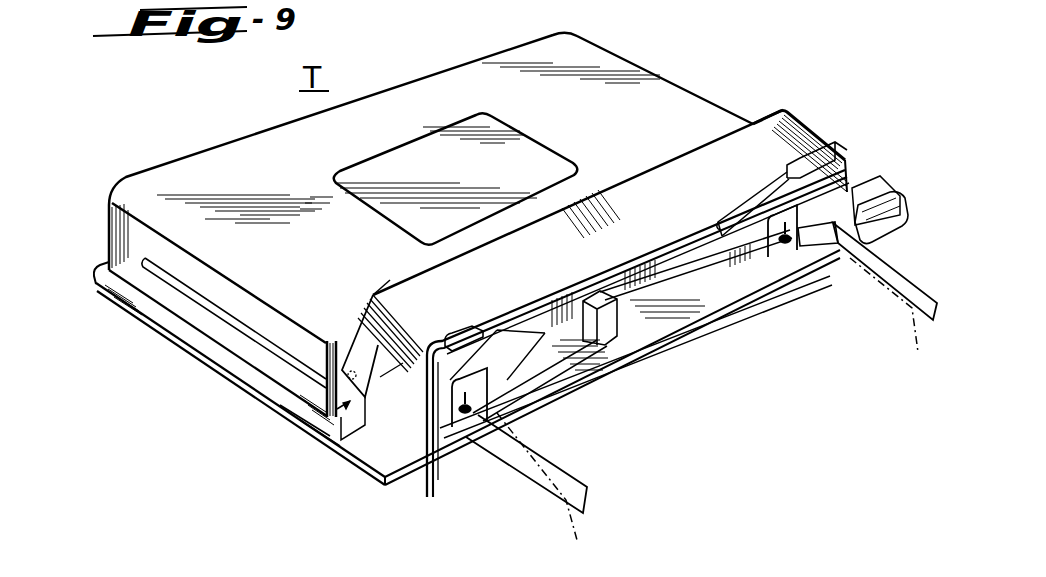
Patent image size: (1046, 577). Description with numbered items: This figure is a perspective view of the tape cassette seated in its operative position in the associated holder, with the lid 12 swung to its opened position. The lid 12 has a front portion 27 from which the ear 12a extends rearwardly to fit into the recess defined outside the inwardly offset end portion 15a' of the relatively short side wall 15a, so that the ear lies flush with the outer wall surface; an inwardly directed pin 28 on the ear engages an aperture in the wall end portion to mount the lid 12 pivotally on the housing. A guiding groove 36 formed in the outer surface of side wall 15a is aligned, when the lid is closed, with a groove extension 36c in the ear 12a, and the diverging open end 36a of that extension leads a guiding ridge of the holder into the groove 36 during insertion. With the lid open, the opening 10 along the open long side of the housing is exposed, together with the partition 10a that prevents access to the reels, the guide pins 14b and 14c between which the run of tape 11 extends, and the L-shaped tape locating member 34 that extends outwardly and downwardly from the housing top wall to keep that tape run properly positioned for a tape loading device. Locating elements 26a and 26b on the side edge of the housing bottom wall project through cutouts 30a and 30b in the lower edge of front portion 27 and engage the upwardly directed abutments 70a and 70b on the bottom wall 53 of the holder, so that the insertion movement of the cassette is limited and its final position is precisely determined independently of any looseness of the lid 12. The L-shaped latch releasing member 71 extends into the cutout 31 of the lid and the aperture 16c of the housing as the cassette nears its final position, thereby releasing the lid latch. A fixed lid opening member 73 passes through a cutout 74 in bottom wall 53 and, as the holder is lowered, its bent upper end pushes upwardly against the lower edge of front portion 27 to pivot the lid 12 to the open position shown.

The lid 12 is at (733, 158).
The ear 12a is at (368, 306).
The front portion 27 is at (634, 167).
The groove 36 is at (215, 297).
The diverging open end 36a is at (386, 320).
The groove extension 36c is at (343, 440).
The bottom wall 53 is at (154, 328).
The side wall 15a is at (497, 367).
The inwardly offset end portion 15a' is at (308, 452).
The pin 28 is at (306, 412).
The cutout 74 is at (426, 488).
The lid opening member 73 is at (434, 497).
The opening 10 is at (673, 245).
The partition 10a is at (557, 400).
The guide pin 14c is at (775, 214).
The guide pin 14b is at (458, 432).
The cutout 30a is at (478, 330).
The cutout 30b is at (808, 175).
The cutout 31 is at (846, 158).
The aperture 16c is at (866, 215).
The latch releasing member 71 is at (880, 237).
The tape locating member 34 is at (627, 350).
The locating element 26a is at (548, 422).
The locating element 26b is at (790, 278).
The abutment 70a is at (920, 300).
The abutment 70b is at (808, 256).
The tape 11 is at (711, 405).